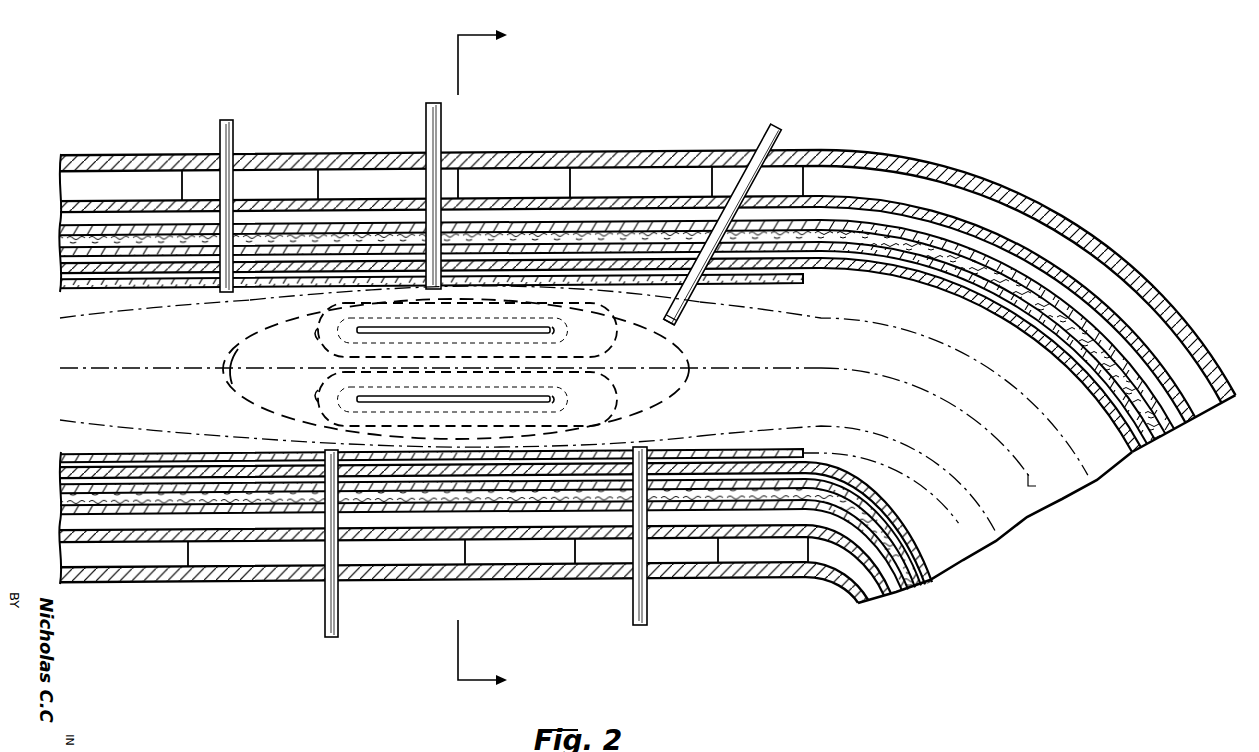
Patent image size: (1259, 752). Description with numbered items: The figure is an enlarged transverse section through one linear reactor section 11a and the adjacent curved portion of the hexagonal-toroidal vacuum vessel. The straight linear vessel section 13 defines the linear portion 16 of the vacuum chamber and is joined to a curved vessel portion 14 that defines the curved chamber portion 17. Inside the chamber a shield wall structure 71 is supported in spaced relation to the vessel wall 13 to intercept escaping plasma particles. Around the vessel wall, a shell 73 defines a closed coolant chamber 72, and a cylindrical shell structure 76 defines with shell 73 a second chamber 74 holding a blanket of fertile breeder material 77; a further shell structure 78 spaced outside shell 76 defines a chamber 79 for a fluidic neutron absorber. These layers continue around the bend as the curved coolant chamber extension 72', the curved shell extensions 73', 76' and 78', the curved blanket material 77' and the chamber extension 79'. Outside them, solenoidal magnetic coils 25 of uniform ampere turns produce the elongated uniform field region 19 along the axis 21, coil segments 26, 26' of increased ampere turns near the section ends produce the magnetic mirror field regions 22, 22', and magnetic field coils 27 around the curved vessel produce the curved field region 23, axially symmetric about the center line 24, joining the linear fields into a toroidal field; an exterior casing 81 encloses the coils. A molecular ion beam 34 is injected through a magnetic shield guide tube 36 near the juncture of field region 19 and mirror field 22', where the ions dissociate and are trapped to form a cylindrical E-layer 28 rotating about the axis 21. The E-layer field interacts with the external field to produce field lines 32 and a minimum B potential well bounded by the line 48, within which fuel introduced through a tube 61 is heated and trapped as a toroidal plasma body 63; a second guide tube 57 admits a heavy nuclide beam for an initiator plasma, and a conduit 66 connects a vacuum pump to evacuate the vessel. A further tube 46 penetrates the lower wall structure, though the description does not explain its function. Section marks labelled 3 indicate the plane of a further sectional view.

The reactor section 11a is at (551, 132).
The exterior casing or housing structure 81 is at (165, 152).
The solenoidal coil segment 26 is at (131, 185).
The solenoidal magnetic coils 25 is at (188, 193).
The solenoidal coil segment 26' is at (783, 181).
The magnetic field coils 27 is at (968, 220).
The shell structure 78 is at (440, 191).
The chamber 79 is at (440, 193).
The curved extension of shell structure 78' is at (1008, 309).
The chamber extension 79' is at (1003, 315).
The second chamber 74 is at (549, 228).
The cylindrical shell structure 76 is at (997, 303).
The curved extension of shell structure 76' is at (998, 332).
The fertile fusionable fuel breeder material 77 is at (440, 226).
The blanket material 77' is at (993, 333).
The shell 73 is at (413, 250).
The curved extension of shell 73' is at (988, 343).
The linear vessel section 13 is at (70, 268).
The closed chamber 72 is at (981, 355).
The curved coolant chamber extension 72' is at (976, 360).
The shield wall structure 71 is at (67, 288).
The curved vessel portion 14 is at (1137, 454).
The magnetic shield guide tube 57 is at (232, 126).
The tube 61 is at (426, 108).
The conduit 66 is at (338, 605).
The spar 46 is at (648, 606).
The magnetic shield guide tube 36 is at (771, 128).
The molecular ion beam 34 is at (677, 322).
The magnetic field lines 32 is at (238, 349).
The line 48 is at (318, 340).
The toroidal plasma body 63 is at (452, 315).
The E-layer 28 is at (553, 331).
The linear portion of vacuum chamber 16 is at (85, 307).
The region of substantially uniform magnetic field intensity 19 is at (258, 315).
The axis 21 is at (738, 367).
The curved chamber portion 17 is at (968, 343).
The magnetic mirror field region 22 is at (380, 410).
The magnetic mirror field region 22' is at (847, 453).
The curved magnetic field region 23 is at (978, 418).
The center line 24 is at (1033, 493).
The section line 3- 3 is at (493, 359).